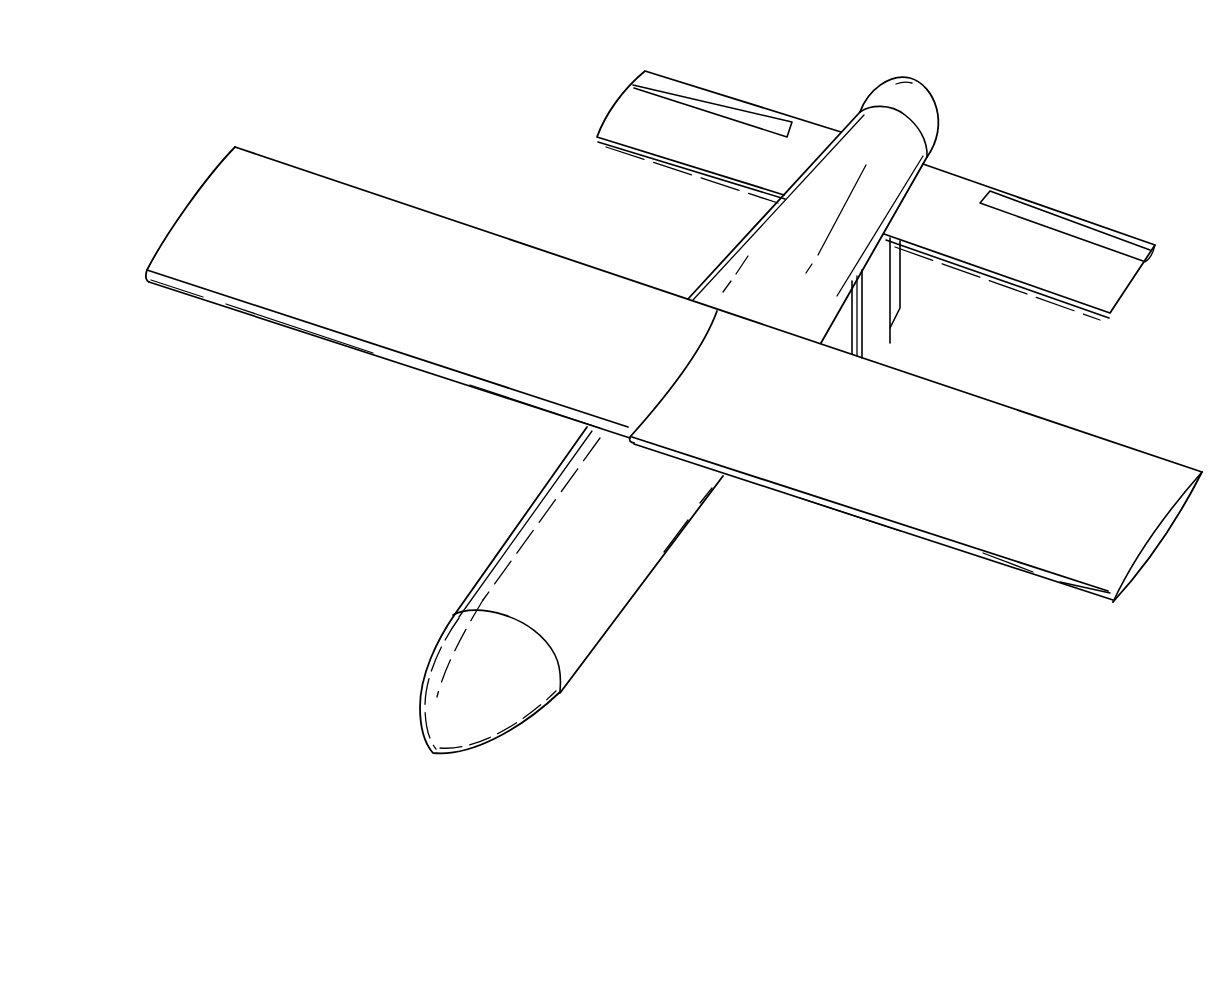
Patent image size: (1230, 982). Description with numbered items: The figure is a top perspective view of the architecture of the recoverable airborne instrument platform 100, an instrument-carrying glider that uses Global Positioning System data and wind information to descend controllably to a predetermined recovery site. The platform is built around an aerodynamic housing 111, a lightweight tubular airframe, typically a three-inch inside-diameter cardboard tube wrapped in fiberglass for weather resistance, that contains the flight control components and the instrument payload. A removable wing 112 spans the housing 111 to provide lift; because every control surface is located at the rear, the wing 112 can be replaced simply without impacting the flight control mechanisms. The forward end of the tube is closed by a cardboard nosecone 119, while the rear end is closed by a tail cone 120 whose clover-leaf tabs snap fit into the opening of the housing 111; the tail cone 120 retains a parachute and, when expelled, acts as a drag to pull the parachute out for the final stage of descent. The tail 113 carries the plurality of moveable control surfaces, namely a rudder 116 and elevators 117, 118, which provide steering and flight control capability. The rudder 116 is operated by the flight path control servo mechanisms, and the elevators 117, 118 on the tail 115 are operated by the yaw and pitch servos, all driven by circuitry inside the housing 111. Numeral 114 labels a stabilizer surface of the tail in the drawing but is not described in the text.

The recoverable airborne instrument platform 100 is at (840, 640).
The housing 111 is at (480, 575).
The wing 112 is at (286, 335).
The tail 113 is at (1120, 300).
The left horizontal stabilizer 114 is at (614, 153).
The tail 115 is at (889, 343).
The rudder 116 is at (898, 290).
The elevator 117 is at (1062, 220).
The elevator 118 is at (683, 90).
The nosecone 119 is at (422, 738).
The tail cone 120 is at (935, 85).